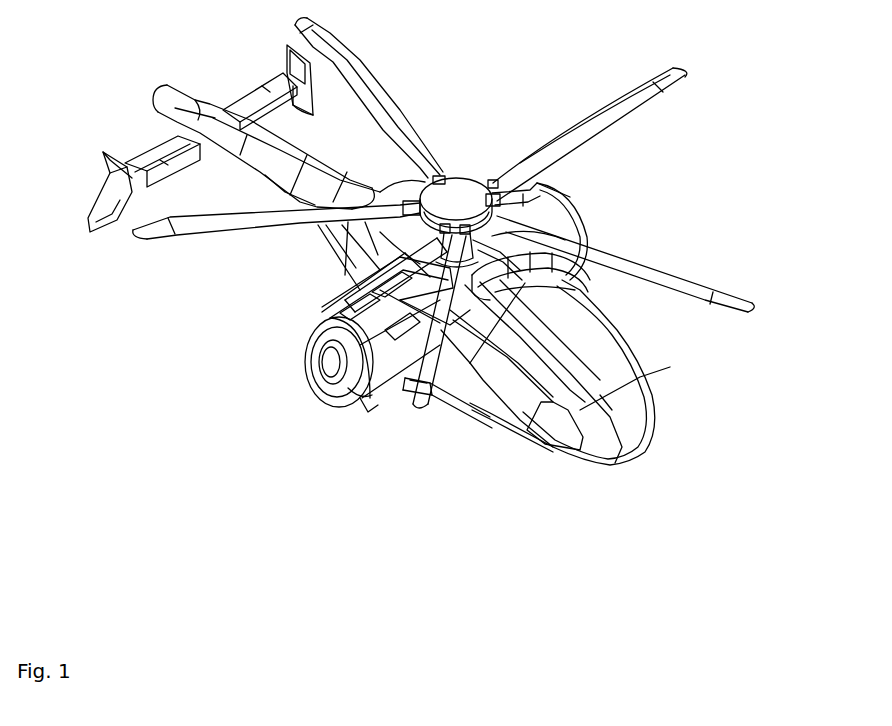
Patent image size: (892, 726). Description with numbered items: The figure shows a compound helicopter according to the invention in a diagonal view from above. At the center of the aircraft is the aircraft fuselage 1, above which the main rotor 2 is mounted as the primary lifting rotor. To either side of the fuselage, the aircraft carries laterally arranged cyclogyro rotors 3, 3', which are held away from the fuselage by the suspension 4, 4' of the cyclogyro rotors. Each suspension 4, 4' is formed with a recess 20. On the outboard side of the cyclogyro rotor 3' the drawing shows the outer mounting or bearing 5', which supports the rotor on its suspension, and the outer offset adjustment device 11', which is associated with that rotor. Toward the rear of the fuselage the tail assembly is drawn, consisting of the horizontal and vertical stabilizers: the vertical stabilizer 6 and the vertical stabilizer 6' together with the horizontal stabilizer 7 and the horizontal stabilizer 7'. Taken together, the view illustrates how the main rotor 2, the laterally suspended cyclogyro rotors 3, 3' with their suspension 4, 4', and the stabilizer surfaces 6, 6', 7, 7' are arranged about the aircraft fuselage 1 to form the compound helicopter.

The aircraft fuselage 1 is at (602, 390).
The main rotor 2 is at (685, 285).
The cyclogyro rotor 3 is at (633, 233).
The suspension 4 is at (632, 152).
The vertical stabilizer 6 is at (249, 70).
The horizontal stabilizer 7 is at (351, 76).
The horizontal stabilizer 7' is at (120, 124).
The vertical stabilizer 6' is at (134, 260).
The recess 20 is at (347, 288).
The suspension 4' is at (315, 369).
The outer offset adjustment device 11' is at (297, 436).
The outer mounting or bearing 5' is at (383, 475).
The cyclogyro rotor 3' is at (479, 458).